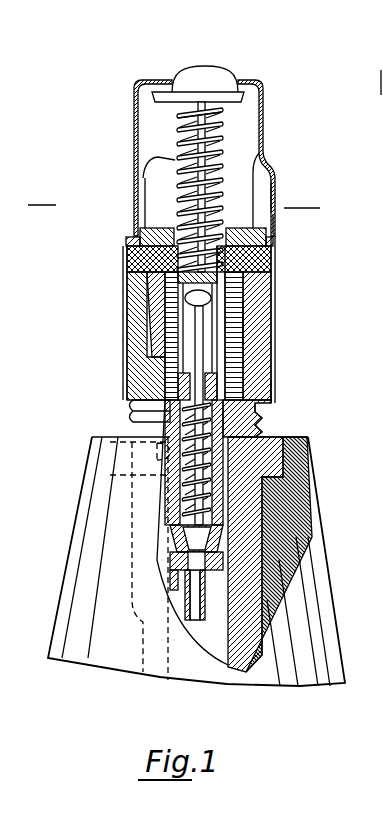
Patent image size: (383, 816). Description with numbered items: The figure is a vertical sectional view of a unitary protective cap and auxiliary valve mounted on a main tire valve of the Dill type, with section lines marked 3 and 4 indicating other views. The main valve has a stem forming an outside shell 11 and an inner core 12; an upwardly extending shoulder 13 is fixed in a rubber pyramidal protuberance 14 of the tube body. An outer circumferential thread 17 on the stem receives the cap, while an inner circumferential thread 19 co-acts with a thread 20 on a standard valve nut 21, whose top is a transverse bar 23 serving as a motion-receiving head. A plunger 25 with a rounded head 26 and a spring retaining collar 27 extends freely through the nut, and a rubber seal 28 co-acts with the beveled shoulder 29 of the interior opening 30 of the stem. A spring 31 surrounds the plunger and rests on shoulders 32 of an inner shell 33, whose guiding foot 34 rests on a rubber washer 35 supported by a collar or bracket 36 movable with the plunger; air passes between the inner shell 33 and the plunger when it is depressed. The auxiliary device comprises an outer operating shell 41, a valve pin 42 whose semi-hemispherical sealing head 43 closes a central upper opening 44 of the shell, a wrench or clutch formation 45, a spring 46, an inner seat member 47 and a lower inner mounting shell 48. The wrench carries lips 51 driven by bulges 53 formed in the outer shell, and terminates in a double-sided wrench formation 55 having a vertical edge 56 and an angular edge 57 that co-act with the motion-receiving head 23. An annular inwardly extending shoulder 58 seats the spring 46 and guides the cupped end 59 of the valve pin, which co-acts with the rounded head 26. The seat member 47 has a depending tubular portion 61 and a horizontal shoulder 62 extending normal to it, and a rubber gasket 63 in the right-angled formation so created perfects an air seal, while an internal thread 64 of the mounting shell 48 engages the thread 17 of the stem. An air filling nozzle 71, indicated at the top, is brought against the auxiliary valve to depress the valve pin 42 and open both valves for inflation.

The section line 3- 3 is at (43, 200).
The section line 4 is at (375, 199).
The outside shell 11 is at (126, 428).
The inner core 12 is at (213, 606).
The upwardly extending shoulder 13 is at (273, 437).
The rubber pyramidal protuberance 14 is at (196, 561).
The outer circumferential thread 17 is at (140, 413).
The inner circumferential thread 19 is at (258, 410).
The thread 20 is at (278, 378).
The standard valve nut 21 is at (276, 366).
The transverse bar 23 is at (272, 342).
The plunger 25 is at (243, 334).
The rounded head 26 is at (243, 323).
The spring retaining collar 27 is at (196, 366).
The rubber seal 28 is at (257, 432).
The beveled sides or shoulder 29 is at (97, 448).
The interior opening 30 is at (207, 595).
The spring 31 is at (182, 487).
The shoulders 32 is at (185, 503).
The inner shell 33 is at (262, 490).
The guiding foot 34 is at (220, 541).
The rubber washer 35 is at (217, 561).
The collar or bracket 36 is at (225, 571).
The outer operating shell 41 is at (136, 147).
The valve pin 42 is at (175, 173).
The sealing head 43 is at (221, 69).
The central upper opening 44 is at (174, 84).
The wrench or clutch formation 45 is at (228, 206).
The spring 46 is at (175, 133).
The inner seat member 47 is at (127, 236).
The inner mounting shell 48 is at (126, 277).
The lips 51 is at (276, 220).
The bulges 53 is at (277, 175).
The double-sided wrench formation 55 is at (193, 347).
The vertical edge 56 is at (275, 357).
The angular edge 57 is at (148, 345).
The annular inwardly extending shoulder 58 is at (253, 295).
The cupped end 59 is at (276, 256).
The tubular portion 61 is at (137, 199).
The nut flange 62 is at (262, 235).
The rubber gasket 63 is at (124, 258).
The internal thread 64 is at (125, 313).
The air filling nozzle 71 is at (378, 42).